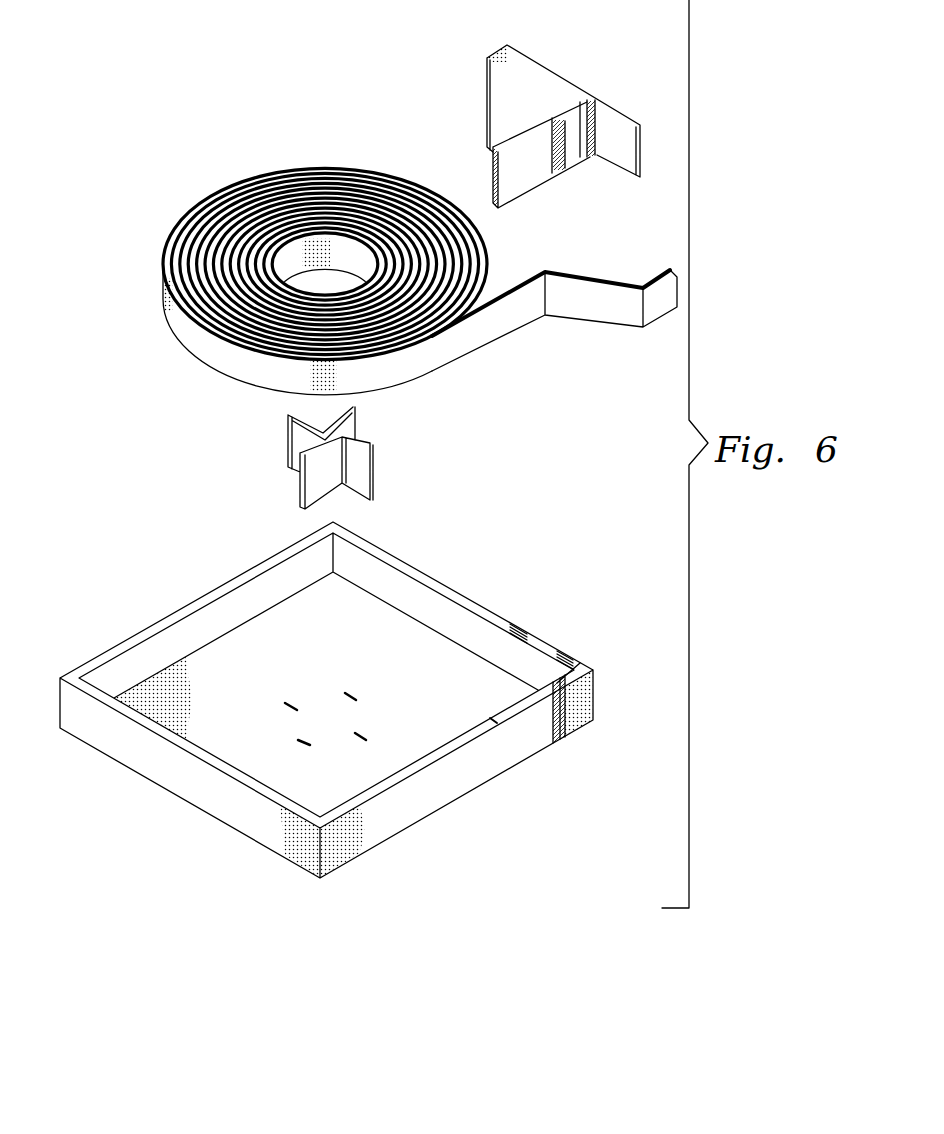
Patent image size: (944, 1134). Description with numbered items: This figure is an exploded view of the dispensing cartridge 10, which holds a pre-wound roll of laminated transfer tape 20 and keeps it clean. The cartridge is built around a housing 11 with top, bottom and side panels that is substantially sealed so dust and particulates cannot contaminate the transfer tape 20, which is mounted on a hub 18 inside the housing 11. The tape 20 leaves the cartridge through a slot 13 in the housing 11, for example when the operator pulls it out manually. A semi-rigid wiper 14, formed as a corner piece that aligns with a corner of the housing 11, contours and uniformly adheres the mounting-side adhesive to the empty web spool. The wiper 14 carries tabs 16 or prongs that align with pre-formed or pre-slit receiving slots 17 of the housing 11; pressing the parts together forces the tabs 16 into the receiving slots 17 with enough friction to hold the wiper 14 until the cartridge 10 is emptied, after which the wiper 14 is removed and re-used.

The dispensing cartridge 10 is at (350, 741).
The housing 11 is at (350, 700).
The slot 13 is at (566, 738).
The semi-rigid wiper 14 is at (563, 122).
The tabs 16 is at (513, 200).
The receiving slots 17 is at (525, 628).
The hub 18 is at (287, 440).
The transfer tape 20 is at (313, 167).